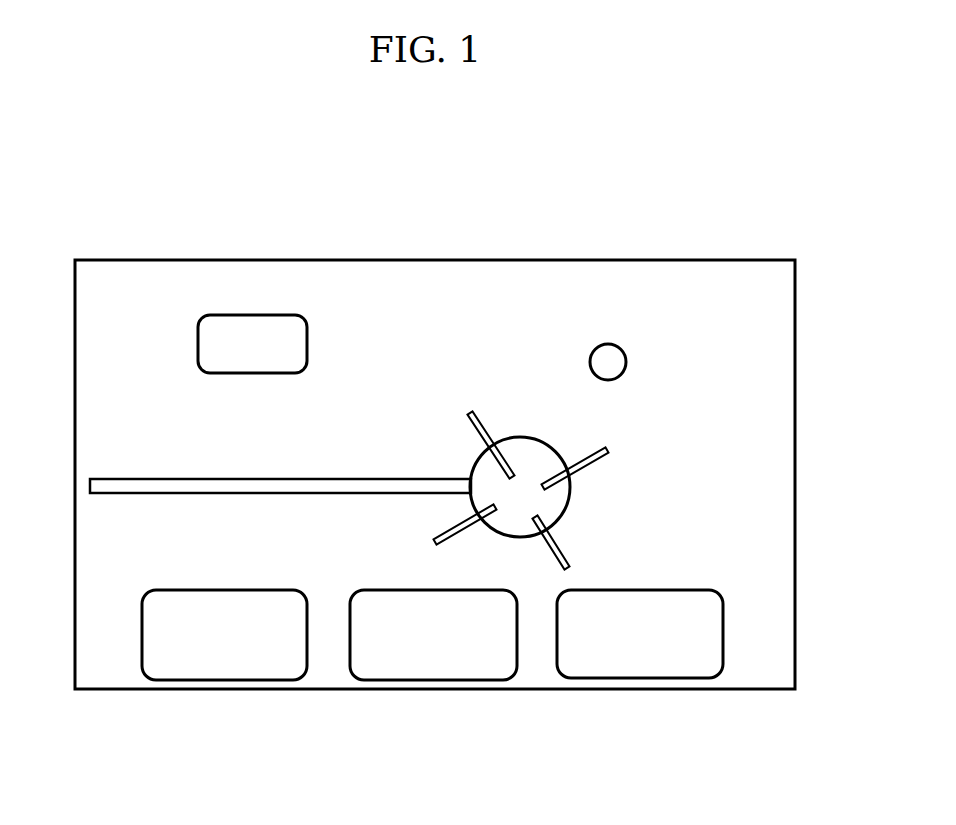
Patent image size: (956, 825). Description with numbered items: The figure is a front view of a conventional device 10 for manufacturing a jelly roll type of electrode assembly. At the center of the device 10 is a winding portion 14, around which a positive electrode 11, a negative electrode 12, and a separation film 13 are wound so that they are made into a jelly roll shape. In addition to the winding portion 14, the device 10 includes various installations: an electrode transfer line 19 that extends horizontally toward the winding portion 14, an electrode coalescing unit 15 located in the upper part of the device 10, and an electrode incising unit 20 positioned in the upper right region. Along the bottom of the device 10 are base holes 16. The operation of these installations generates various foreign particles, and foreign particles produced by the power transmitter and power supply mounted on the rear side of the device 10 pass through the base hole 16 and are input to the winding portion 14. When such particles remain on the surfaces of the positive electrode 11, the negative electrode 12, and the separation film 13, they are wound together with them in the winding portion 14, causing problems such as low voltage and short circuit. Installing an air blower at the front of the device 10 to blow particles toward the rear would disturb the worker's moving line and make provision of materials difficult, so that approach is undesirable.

The device for manufacturing an electrode assembly 10 is at (160, 203).
The positive electrode 11 is at (480, 413).
The negative electrode 12 is at (565, 553).
The separation film 13 is at (610, 447).
The winding portion 14 is at (477, 470).
The electrode coalescing unit 15 is at (290, 342).
The base hole 16 is at (598, 660).
The electrode transfer line 19 is at (140, 483).
The electrode incising unit 20 is at (613, 352).